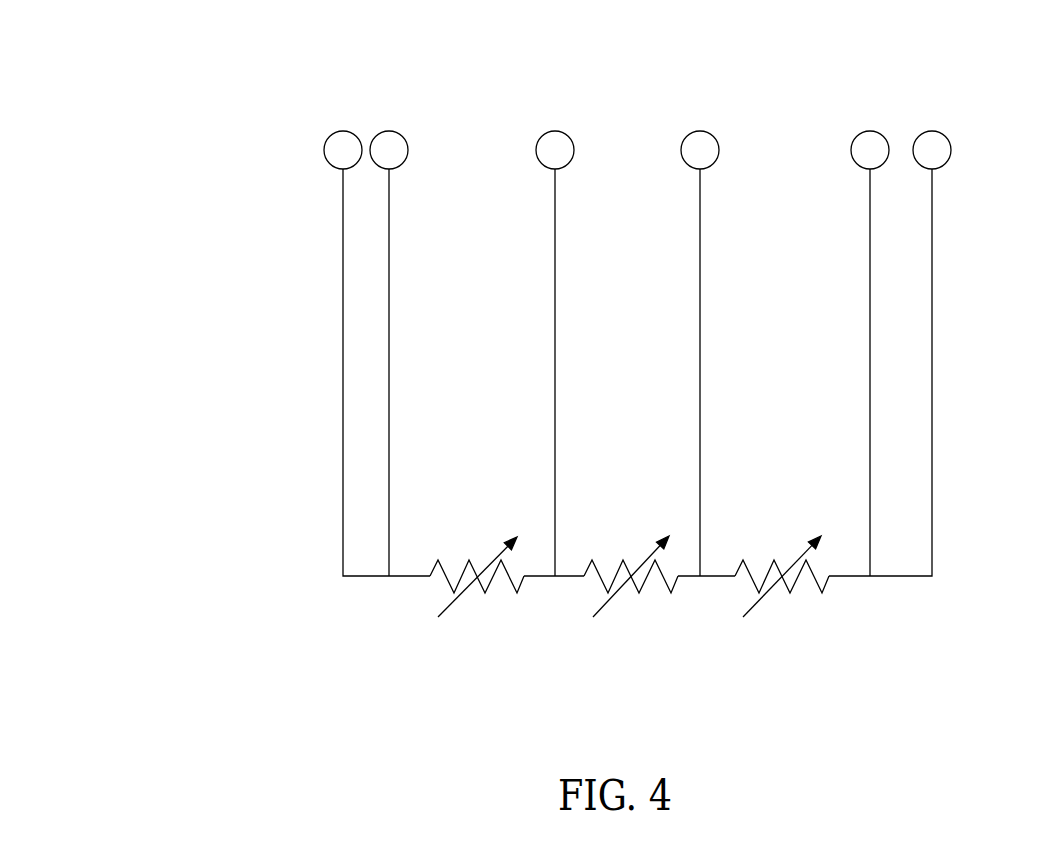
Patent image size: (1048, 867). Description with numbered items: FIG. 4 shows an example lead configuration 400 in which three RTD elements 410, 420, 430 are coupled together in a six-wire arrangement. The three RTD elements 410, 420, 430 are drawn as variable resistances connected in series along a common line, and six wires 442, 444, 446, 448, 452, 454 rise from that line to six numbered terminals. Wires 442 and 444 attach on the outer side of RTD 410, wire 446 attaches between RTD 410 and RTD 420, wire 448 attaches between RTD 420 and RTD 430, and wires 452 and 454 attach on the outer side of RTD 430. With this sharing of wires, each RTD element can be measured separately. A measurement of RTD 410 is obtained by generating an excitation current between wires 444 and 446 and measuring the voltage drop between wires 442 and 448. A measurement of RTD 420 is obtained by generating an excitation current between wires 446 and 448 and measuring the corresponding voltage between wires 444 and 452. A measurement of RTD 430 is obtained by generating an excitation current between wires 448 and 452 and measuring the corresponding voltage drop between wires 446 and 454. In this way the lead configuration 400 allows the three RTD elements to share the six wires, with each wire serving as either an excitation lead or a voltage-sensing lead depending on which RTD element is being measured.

The lead configuration 400 is at (602, 335).
The RTD element 410 is at (477, 586).
The RTD element 420 is at (631, 586).
The RTD element 430 is at (782, 586).
The wire 442 is at (341, 129).
The wire 444 is at (402, 131).
The wire 446 is at (567, 131).
The wire 448 is at (705, 131).
The wire 452 is at (870, 131).
The wire 454 is at (948, 131).